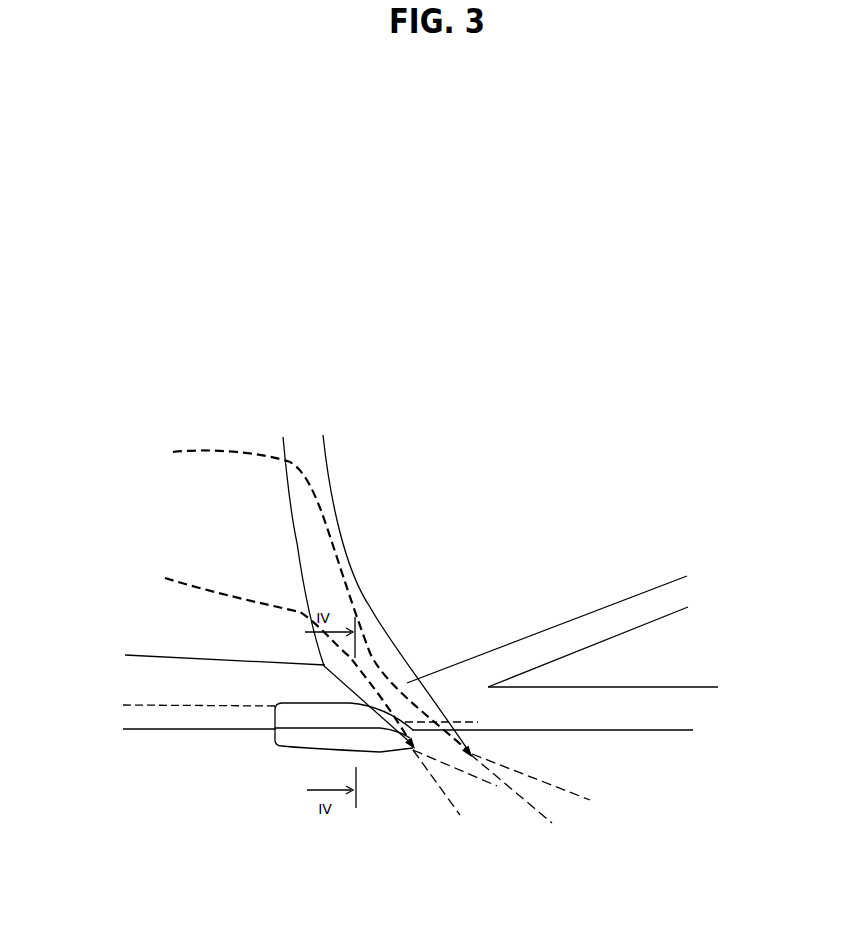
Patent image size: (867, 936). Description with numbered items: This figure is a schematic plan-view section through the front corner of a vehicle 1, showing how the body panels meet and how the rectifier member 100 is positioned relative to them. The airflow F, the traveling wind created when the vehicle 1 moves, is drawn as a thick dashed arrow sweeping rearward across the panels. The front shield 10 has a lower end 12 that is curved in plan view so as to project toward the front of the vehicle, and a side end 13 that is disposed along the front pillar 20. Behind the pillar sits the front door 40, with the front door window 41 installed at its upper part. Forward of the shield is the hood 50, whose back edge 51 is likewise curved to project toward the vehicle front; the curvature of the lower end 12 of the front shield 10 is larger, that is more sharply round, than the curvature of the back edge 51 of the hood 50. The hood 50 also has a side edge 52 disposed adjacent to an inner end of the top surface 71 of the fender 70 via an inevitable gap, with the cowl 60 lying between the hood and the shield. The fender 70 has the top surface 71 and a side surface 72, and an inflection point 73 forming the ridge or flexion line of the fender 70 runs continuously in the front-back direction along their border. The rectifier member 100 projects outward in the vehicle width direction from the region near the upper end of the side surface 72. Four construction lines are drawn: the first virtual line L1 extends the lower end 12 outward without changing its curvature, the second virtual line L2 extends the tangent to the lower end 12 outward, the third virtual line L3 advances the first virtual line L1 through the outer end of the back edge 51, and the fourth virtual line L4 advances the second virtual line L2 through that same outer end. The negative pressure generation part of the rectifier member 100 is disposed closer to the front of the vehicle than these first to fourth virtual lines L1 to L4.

The vehicle 1 is at (128, 478).
The airflow (traveling wind) F is at (319, 586).
The front shield 10 is at (581, 567).
The lower end 12 is at (342, 540).
The side end 13 is at (596, 610).
The front pillar 20 is at (632, 613).
The front door 40 is at (659, 730).
The front door window 41 is at (669, 662).
The hood 50 is at (185, 512).
The back edge 51 is at (297, 543).
The side edge 52 is at (207, 661).
The cowl 60 is at (312, 458).
The fender 70 is at (172, 730).
The top surface 71 is at (207, 685).
The side surface 72 is at (212, 717).
The inflection point 73 is at (157, 707).
The rectifier member 100 is at (303, 748).
The first virtual line L1 is at (573, 794).
The second virtual line L2 is at (530, 803).
The third virtual line L3 is at (486, 781).
The fourth virtual line L4 is at (436, 785).